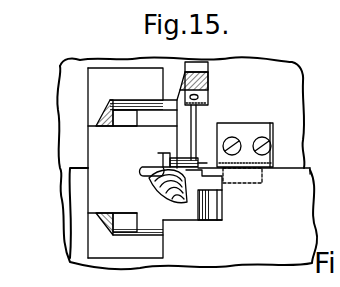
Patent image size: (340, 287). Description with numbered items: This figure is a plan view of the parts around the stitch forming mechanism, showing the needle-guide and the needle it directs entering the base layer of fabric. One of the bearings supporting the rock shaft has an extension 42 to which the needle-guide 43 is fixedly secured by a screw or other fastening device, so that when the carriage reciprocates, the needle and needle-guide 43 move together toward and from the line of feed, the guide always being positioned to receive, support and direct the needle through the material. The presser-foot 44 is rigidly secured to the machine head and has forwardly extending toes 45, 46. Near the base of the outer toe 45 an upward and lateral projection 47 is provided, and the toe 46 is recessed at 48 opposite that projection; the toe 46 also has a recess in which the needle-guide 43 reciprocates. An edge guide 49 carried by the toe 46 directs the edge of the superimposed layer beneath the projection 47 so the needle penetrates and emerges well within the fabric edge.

The extension 42 is at (210, 87).
The needle-guide 43 is at (192, 143).
The presser-foot 44 is at (132, 164).
The outer toe 45 is at (223, 208).
The toe 46 is at (217, 140).
The projection 47 is at (152, 183).
The recess 48 is at (166, 153).
The edge guide 49 is at (268, 162).